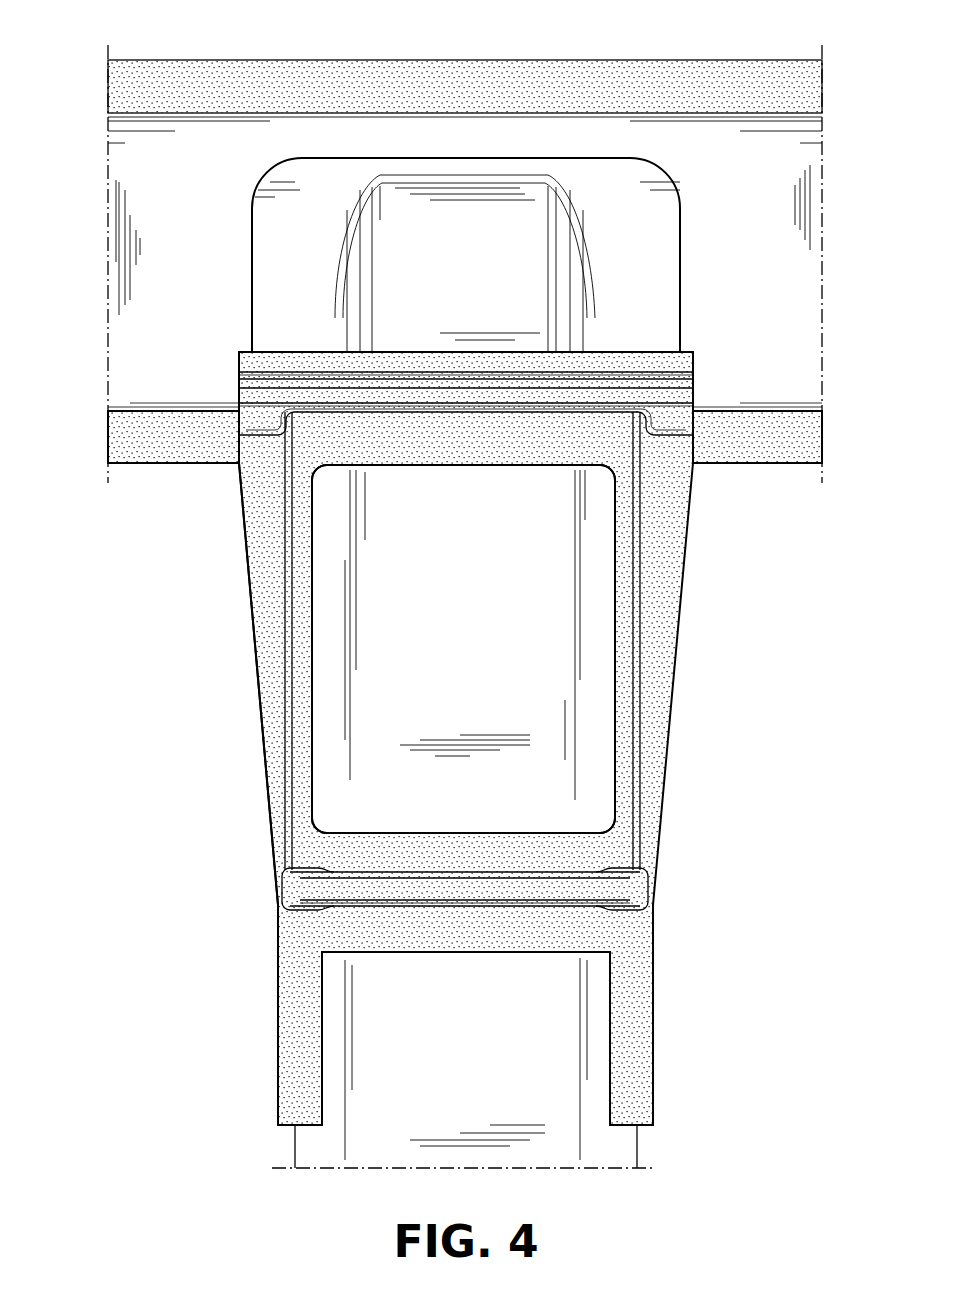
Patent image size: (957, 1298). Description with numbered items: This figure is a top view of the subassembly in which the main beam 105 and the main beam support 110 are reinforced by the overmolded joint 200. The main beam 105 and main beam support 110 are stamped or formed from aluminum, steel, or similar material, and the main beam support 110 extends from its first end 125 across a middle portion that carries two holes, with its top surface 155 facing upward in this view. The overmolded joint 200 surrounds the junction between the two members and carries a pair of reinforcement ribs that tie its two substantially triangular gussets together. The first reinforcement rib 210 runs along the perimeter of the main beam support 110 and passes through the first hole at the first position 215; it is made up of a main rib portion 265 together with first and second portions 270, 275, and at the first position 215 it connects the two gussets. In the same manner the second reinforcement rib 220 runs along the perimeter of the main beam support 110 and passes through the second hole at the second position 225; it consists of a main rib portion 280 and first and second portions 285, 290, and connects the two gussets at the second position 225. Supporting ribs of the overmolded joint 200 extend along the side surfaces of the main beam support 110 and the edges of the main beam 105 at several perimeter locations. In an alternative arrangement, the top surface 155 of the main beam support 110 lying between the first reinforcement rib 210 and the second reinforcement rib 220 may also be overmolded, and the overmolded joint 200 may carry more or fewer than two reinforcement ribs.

The main beam 105 is at (763, 233).
The main beam support 110 is at (400, 1125).
The first end 125 is at (465, 245).
The top surface 155 is at (413, 688).
The overmolded joint 200 is at (725, 492).
The first reinforcement rib 210 is at (641, 378).
The first position 215 is at (470, 393).
The second reinforcement rib 220 is at (612, 867).
The second position 225 is at (473, 892).
The main rib portion 265 is at (402, 392).
The first portion 270 is at (405, 362).
The second portion 275 is at (403, 443).
The main rib portion 280 is at (413, 888).
The first portion 285 is at (437, 855).
The second portion 290 is at (433, 928).